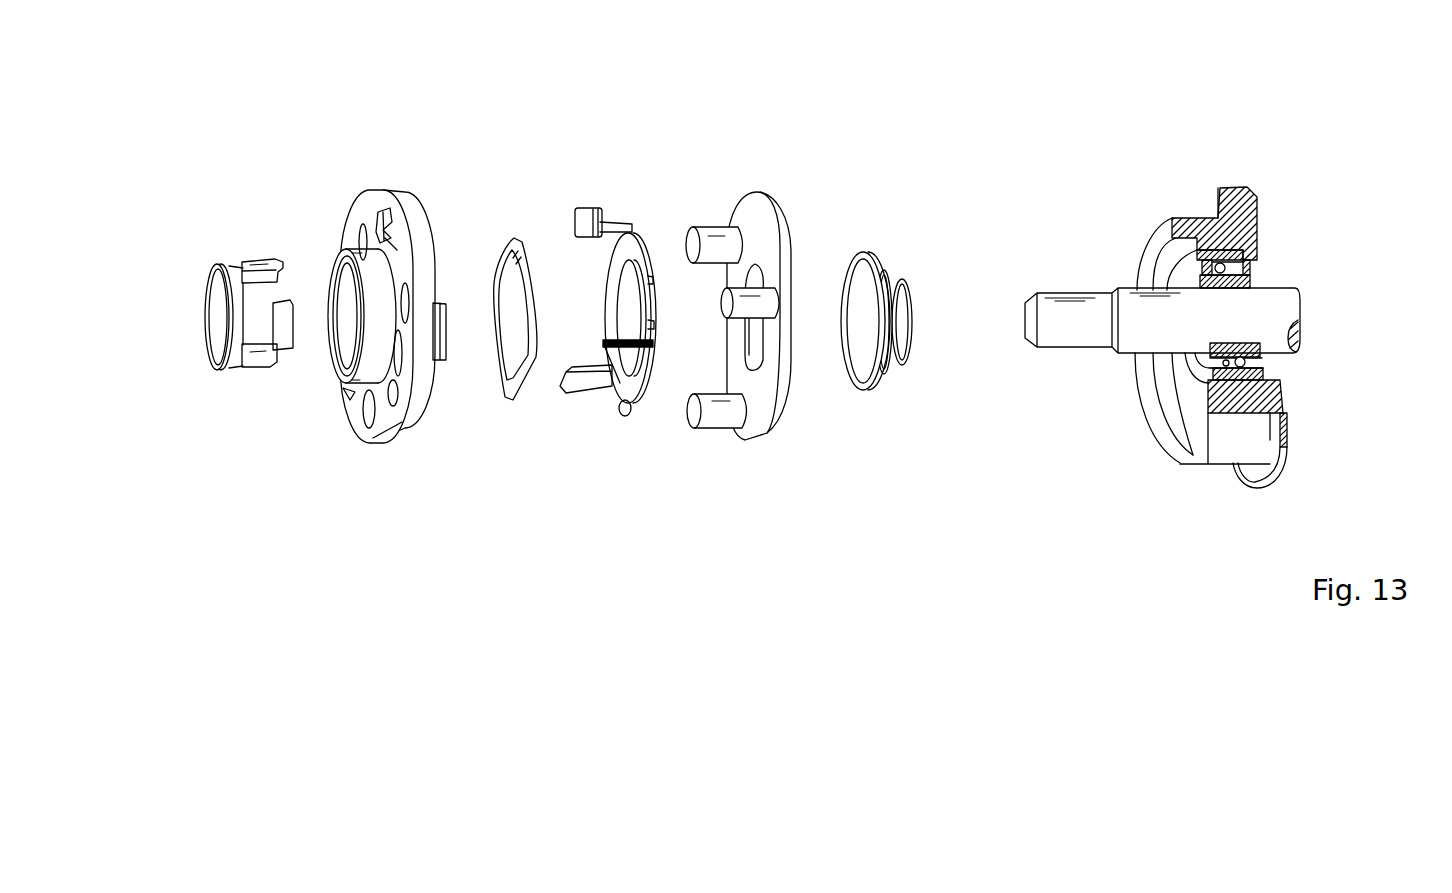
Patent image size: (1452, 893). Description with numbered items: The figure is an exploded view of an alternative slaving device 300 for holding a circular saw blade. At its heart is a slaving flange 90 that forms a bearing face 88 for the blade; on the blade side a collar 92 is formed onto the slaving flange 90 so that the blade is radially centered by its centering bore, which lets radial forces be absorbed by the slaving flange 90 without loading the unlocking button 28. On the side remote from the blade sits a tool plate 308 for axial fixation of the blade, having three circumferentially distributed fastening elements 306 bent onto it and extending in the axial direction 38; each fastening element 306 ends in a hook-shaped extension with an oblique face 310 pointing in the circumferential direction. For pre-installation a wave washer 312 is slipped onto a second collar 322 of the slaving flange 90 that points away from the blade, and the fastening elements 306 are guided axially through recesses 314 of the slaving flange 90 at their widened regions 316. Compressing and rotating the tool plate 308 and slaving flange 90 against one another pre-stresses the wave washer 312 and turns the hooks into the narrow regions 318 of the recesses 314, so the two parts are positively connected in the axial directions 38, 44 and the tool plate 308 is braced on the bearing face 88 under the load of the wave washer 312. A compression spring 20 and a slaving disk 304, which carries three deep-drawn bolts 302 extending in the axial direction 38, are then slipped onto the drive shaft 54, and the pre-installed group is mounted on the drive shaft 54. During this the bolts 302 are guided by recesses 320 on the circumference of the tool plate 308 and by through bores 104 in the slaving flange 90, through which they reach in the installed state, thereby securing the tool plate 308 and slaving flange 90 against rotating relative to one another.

The compression spring 20 is at (862, 387).
The unlocking button 28 is at (217, 343).
The axial direction 38 is at (548, 315).
The axial direction 44 is at (985, 316).
The drive shaft 54 is at (1277, 287).
The bearing face 88 is at (377, 222).
The slaving flange 90 is at (378, 425).
The collar 92 is at (347, 382).
The through bores 104 is at (363, 427).
The slaving device 300 is at (638, 153).
The bolts 302 is at (722, 412).
The slaving disk 304 is at (755, 422).
The fastening elements 306 is at (558, 400).
The tool plate 308 is at (617, 418).
The oblique face 310 is at (583, 210).
The wave washer 312 is at (517, 380).
The recesses 314 is at (392, 408).
The widened regions 316 is at (431, 290).
The narrow regions 318 is at (397, 337).
The recesses 320 is at (651, 288).
The collar 322 is at (430, 357).